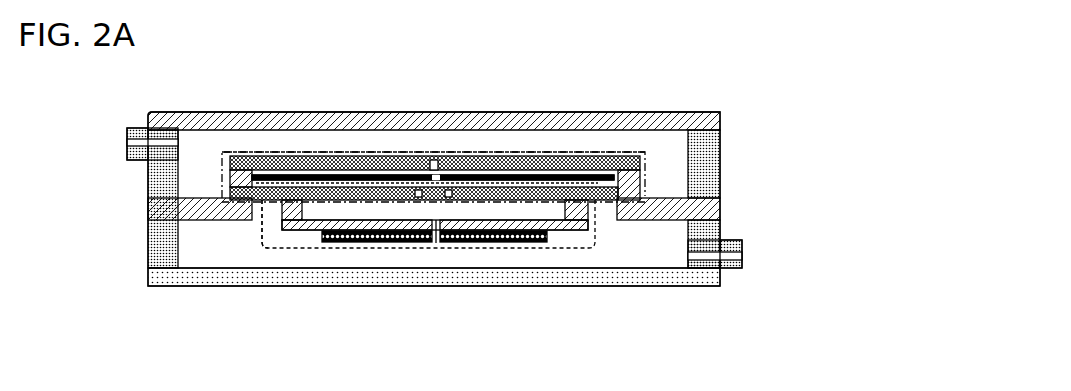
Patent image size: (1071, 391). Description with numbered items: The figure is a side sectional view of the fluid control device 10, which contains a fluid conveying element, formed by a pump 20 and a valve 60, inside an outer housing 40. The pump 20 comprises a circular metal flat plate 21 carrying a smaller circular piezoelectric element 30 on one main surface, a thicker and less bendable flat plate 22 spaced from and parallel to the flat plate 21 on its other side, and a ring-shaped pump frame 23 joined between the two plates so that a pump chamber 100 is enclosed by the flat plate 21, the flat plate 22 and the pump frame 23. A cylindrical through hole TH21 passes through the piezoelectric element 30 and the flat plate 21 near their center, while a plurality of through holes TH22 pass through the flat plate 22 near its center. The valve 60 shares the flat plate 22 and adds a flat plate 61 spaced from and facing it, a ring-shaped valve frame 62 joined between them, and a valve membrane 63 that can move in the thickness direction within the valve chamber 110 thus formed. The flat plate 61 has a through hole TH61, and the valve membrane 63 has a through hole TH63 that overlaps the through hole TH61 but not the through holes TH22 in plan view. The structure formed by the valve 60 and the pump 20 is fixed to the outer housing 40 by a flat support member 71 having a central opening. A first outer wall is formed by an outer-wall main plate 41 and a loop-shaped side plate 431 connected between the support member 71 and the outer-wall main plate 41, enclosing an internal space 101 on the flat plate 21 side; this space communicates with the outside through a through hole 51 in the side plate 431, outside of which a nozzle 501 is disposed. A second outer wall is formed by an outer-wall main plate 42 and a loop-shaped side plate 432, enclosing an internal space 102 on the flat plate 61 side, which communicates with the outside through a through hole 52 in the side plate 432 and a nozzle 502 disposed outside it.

The fluid control device 10 is at (434, 155).
The outer housing 40 is at (455, 178).
The outer-wall main plate 42 is at (434, 102).
The side plate 432 is at (729, 164).
The side plate 431 is at (695, 233).
The outer-wall main plate 41 is at (434, 303).
The internal space 101 is at (434, 296).
The through hole 51 is at (715, 289).
The nozzle 501 is at (740, 276).
The through hole 52 is at (150, 170).
The nozzle 502 is at (124, 162).
The support member 71 is at (181, 219).
The valve 60 is at (432, 135).
The internal space 102 is at (433, 112).
The flat plate 61 is at (435, 120).
The through hole TH61 is at (413, 121).
The valve frame 62 is at (406, 136).
The pump chamber 100 is at (433, 143).
The valve chamber 110 is at (433, 126).
The through hole TH63 is at (458, 128).
The valve membrane 63 is at (424, 135).
The pump 20 is at (390, 269).
The pump frame 23 is at (259, 271).
The flat plate 22 is at (435, 271).
The flat plate 21 is at (435, 281).
The through hole TH21 is at (419, 281).
The through holes TH22 is at (472, 266).
The piezoelectric element 30 is at (434, 286).